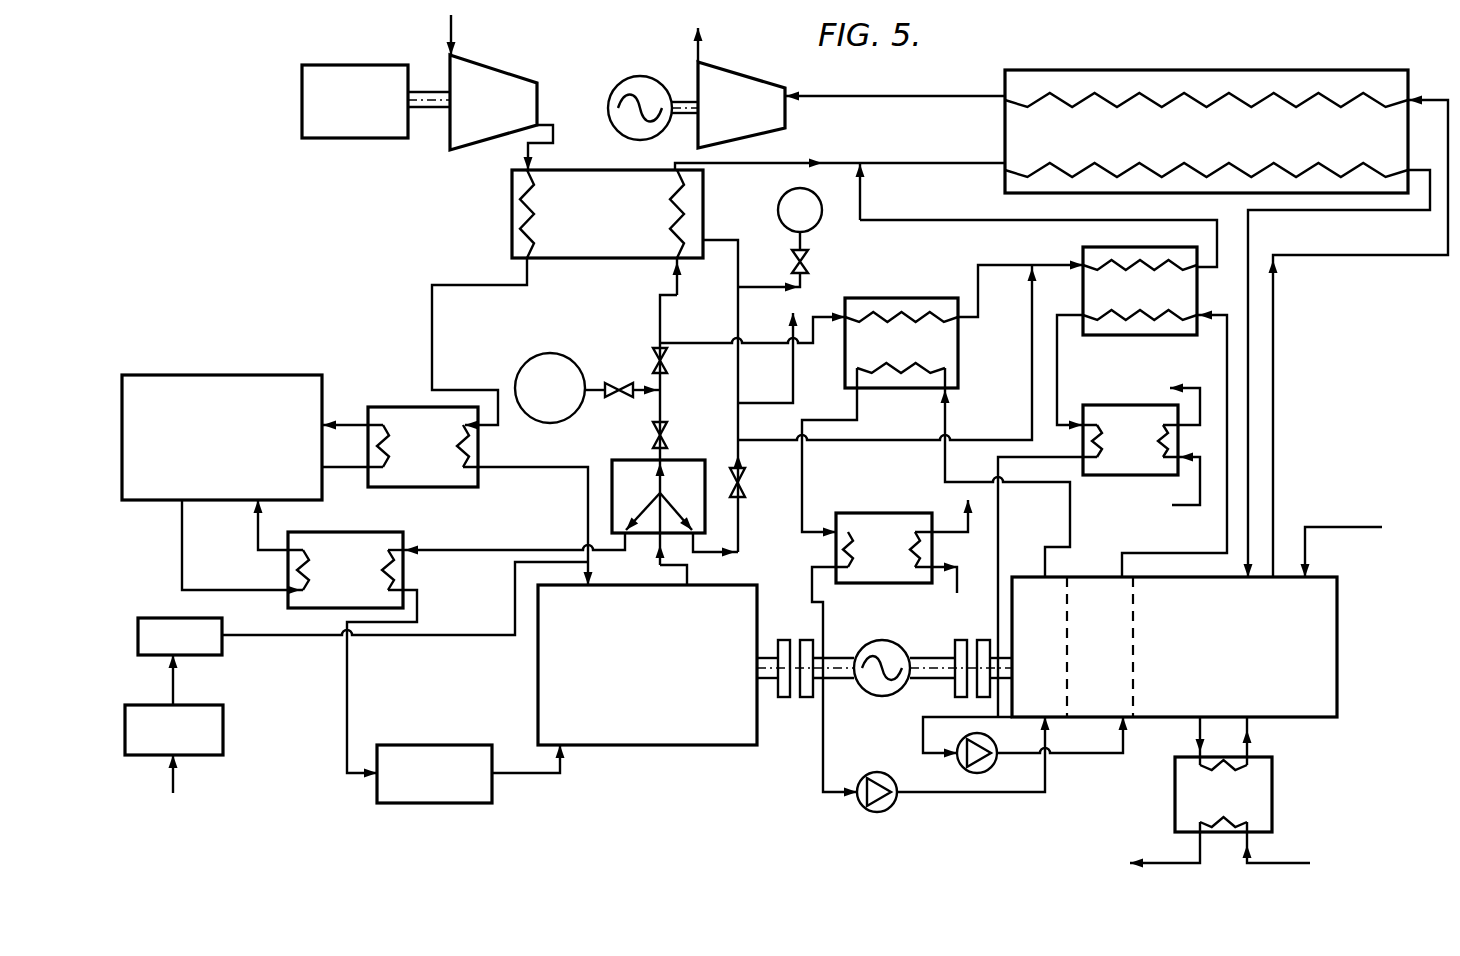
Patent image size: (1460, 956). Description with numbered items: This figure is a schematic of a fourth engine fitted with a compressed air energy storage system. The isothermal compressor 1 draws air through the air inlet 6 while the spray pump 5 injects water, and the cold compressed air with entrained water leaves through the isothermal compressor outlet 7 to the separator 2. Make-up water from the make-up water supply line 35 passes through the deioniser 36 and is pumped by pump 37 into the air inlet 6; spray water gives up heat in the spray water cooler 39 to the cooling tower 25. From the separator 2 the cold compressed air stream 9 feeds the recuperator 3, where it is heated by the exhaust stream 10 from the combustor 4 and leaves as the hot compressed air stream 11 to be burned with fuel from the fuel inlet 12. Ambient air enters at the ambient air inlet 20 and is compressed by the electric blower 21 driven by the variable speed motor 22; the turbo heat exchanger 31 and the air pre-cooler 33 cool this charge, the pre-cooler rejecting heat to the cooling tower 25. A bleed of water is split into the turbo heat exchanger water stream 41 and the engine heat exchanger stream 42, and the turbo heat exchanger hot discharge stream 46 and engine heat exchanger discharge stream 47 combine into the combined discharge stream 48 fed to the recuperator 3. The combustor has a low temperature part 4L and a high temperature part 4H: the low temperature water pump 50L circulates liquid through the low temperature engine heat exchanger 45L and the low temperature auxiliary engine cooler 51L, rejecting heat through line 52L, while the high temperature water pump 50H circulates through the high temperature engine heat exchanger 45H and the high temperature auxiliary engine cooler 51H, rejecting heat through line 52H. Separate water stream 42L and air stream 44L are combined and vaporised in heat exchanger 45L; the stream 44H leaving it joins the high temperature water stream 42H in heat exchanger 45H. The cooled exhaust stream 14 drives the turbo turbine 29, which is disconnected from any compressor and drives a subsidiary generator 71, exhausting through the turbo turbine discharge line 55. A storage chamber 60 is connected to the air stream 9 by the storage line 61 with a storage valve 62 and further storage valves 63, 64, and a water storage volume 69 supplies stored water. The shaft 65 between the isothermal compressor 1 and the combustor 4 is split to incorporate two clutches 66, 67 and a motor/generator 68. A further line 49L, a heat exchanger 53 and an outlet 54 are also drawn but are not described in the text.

The isothermal compressor 1 is at (638, 679).
The separator 2 is at (625, 499).
The recuperator 3 is at (1197, 145).
The combustor 4 is at (1212, 665).
The low temperature part 4L is at (1028, 665).
The high temperature part 4H is at (1086, 665).
The spray pump 5 is at (425, 792).
The air inlet 6 is at (588, 497).
The isothermal compressor outlet 7 is at (656, 562).
The cold compressed air stream 9 is at (657, 412).
The exhaust stream 10 is at (1270, 303).
The hot compressed air stream 11 is at (1248, 294).
The fuel inlet 12 is at (1352, 527).
The cooled exhaust stream 14 is at (861, 96).
The ambient air inlet 20 is at (451, 34).
The electric blower 21 is at (480, 115).
The variable speed motor 22 is at (342, 115).
The cooling tower 25 is at (208, 454).
The turbo turbine 29 is at (728, 119).
The turbo heat exchanger 31 is at (593, 231).
The air pre-cooler 33 is at (409, 463).
The make-up water supply line 35 is at (176, 782).
The deioniser 36 is at (158, 745).
The pump 37 is at (166, 651).
The spray water cooler 39 is at (331, 587).
The turbo heat exchanger water stream 41 is at (737, 308).
The engine heat exchanger stream 42 is at (710, 553).
The engine heat exchanger water stream 42L is at (790, 386).
The high temperature engine heat exchanger water stream 42H is at (948, 422).
The engine heat exchanger air stream 44L is at (766, 340).
The stream leaving low temperature engine heat exchanger 44H is at (995, 263).
The low temperature engine heat exchanger 45L is at (880, 357).
The high temperature engine heat exchanger 45H is at (1120, 305).
The turbo heat exchanger hot discharge stream 46 is at (772, 163).
The engine heat exchanger discharge stream 47 is at (940, 220).
The combined discharge stream 48 is at (930, 163).
The low pressure line 49L is at (1071, 503).
The low temperature water pump 50L is at (860, 806).
The high temperature water pump 50H is at (958, 766).
The low temperature auxiliary engine cooler 51L is at (864, 562).
The high temperature auxiliary engine cooler 51H is at (1112, 454).
The line 52L is at (976, 562).
The line 52H is at (1200, 492).
The heat exchanger 53 is at (1208, 810).
The coolant outlet 54 is at (1160, 860).
The turbo turbine discharge line 55 is at (700, 44).
The storage chamber 60 is at (520, 362).
The storage line 61 is at (640, 383).
The storage valve 62 is at (606, 380).
The storage valve 63 is at (668, 438).
The storage valve 64 is at (668, 355).
The shaft 65 is at (930, 657).
The clutch 66 is at (792, 640).
The clutch 67 is at (980, 640).
The motor/generator 68 is at (876, 642).
The water storage volume 69 is at (780, 206).
The subsidiary generator 71 is at (632, 78).